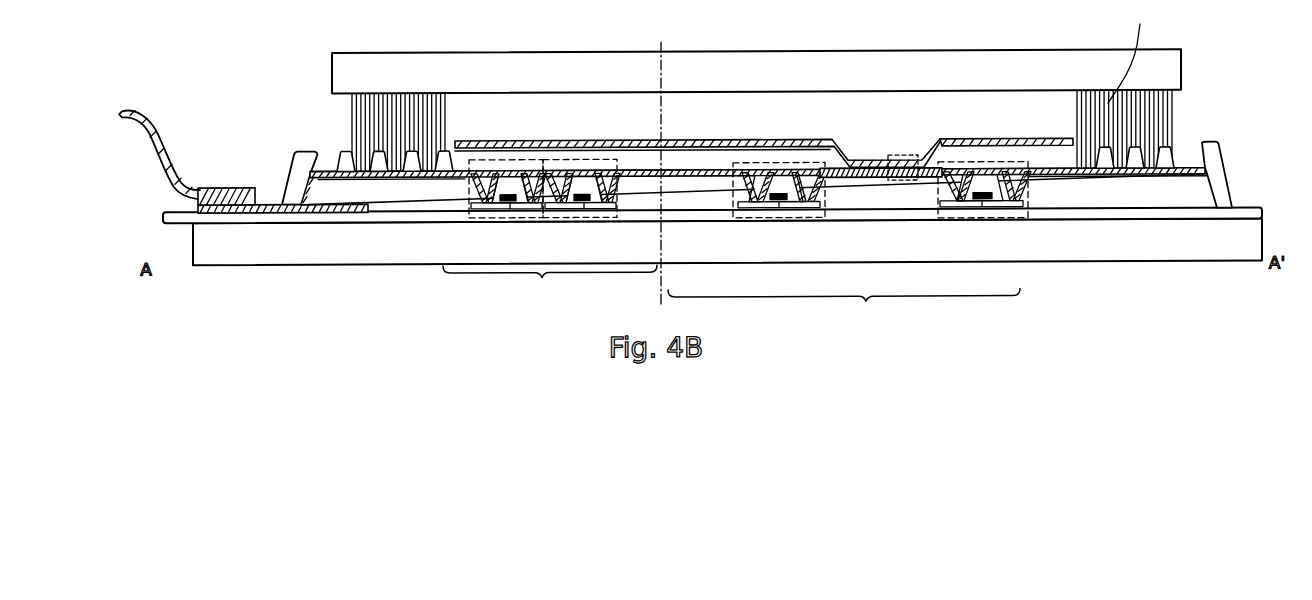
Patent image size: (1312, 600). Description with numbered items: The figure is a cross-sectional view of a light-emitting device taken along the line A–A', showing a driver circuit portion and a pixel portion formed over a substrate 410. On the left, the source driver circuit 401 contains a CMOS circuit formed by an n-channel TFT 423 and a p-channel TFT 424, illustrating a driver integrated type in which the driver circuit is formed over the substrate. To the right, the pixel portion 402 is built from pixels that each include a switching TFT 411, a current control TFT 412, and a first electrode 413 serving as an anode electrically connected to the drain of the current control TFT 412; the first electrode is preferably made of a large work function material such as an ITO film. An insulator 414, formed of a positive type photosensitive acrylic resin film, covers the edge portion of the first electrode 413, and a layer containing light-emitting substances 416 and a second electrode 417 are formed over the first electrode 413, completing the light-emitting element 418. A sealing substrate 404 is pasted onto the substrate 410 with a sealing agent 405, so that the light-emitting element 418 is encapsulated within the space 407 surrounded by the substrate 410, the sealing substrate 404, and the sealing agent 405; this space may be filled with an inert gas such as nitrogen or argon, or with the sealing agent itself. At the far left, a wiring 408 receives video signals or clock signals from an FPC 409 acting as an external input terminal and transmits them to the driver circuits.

The driver circuit portion 401 is at (550, 286).
The pixel portion 402 is at (844, 308).
The sealing substrate 404 is at (579, 62).
The sealing agent 405 is at (1108, 108).
The space 407 is at (579, 132).
The wiring 408 is at (298, 208).
The FPC 409 is at (133, 113).
The substrate 410 is at (1160, 257).
The switching TFT 411 is at (747, 221).
The current control TFT 412 is at (1027, 221).
The first electrode 413 is at (857, 182).
The insulator 414 is at (703, 165).
The layer containing light-emitting substances 416 is at (786, 141).
The second electrode 417 is at (1028, 141).
The light-emitting element 418 is at (906, 187).
The n-channel TFT 423 is at (470, 195).
The p-channel TFT 424 is at (545, 211).